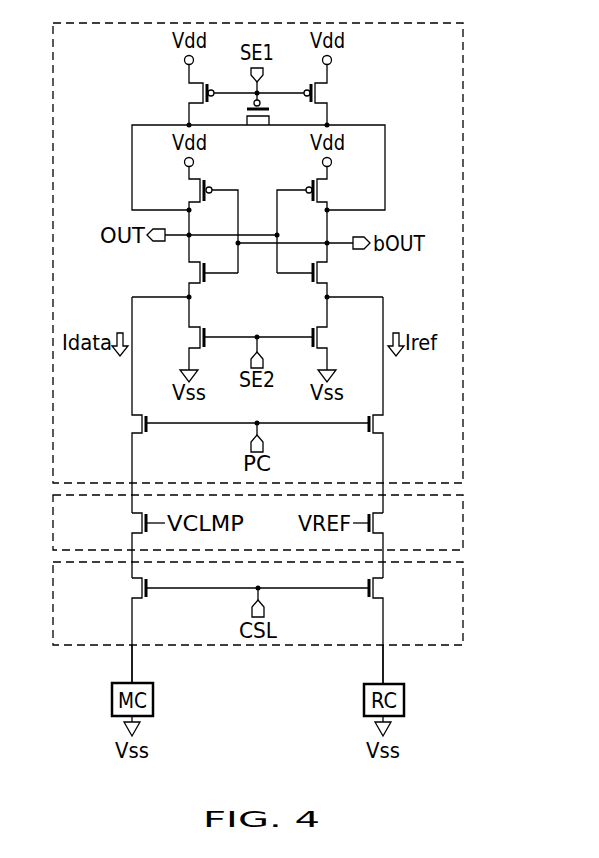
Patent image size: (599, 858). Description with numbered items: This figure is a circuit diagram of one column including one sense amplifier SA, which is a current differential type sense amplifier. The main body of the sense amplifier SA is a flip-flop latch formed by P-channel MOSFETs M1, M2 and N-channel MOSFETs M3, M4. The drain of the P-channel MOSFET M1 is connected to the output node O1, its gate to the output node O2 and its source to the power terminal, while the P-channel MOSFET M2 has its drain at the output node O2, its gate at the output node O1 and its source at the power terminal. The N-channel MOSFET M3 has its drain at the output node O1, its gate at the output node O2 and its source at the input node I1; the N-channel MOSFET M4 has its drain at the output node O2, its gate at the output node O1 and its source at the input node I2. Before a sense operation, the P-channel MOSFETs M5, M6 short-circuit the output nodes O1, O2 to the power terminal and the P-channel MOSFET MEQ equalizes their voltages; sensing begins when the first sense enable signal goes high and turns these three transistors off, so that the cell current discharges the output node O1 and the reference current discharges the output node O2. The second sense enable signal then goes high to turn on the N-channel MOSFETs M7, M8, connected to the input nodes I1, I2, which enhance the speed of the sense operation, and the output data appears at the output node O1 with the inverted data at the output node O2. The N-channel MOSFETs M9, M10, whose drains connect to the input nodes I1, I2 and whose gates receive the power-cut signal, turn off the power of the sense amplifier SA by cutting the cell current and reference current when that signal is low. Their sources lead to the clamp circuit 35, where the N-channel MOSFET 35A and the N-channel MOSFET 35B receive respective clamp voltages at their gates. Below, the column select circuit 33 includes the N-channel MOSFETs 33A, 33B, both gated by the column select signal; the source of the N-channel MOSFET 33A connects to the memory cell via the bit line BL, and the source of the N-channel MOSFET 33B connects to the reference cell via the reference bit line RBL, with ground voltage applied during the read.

The sense amplifier SA is at (463, 68).
The clamp circuit 35 is at (463, 533).
The column select circuit 33 is at (463, 608).
The P-channel MOSFET M1 is at (197, 188).
The P-channel MOSFET M2 is at (325, 190).
The N-channel MOSFET M3 is at (197, 272).
The N-channel MOSFET M4 is at (325, 274).
The P-channel MOSFET M5 is at (198, 90).
The P-channel MOSFET M6 is at (324, 92).
The N-channel MOSFET M7 is at (197, 336).
The N-channel MOSFET M8 is at (325, 338).
The N-channel MOSFET M9 is at (132, 422).
The N-channel MOSFET M10 is at (385, 424).
The P-channel MOSFET MEQ is at (257, 128).
The output node O1 is at (191, 233).
The output node O2 is at (325, 240).
The input node I1 is at (192, 298).
The input node I2 is at (324, 298).
The N-channel MOSFET 35A is at (132, 522).
The N-channel MOSFET 35B is at (385, 524).
The N-channel MOSFET 33A is at (132, 587).
The N-channel MOSFET 33B is at (385, 589).
The bit line BL is at (131, 665).
The reference bit line RBL is at (385, 666).